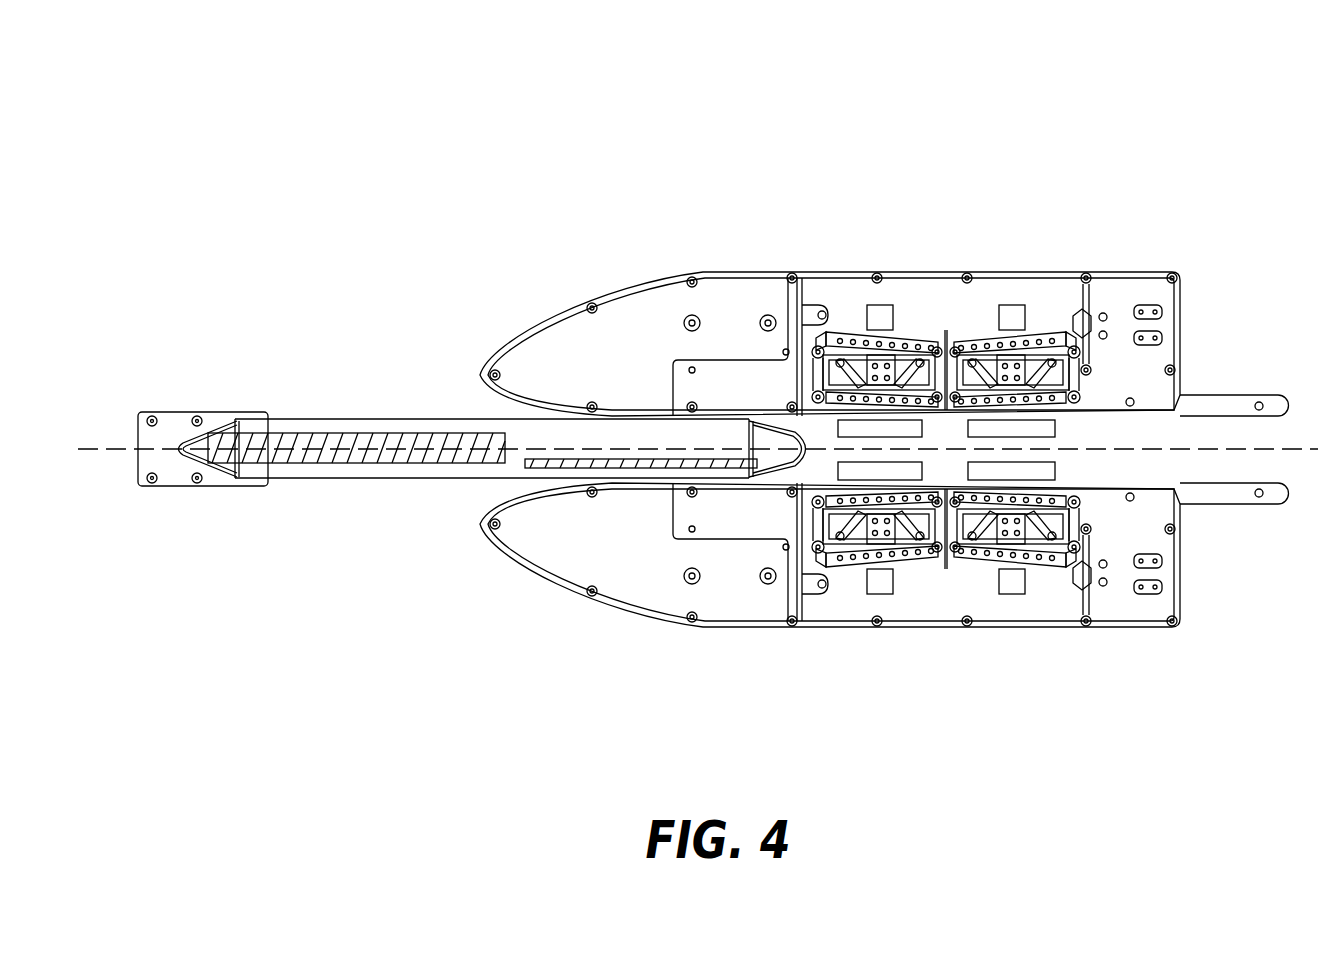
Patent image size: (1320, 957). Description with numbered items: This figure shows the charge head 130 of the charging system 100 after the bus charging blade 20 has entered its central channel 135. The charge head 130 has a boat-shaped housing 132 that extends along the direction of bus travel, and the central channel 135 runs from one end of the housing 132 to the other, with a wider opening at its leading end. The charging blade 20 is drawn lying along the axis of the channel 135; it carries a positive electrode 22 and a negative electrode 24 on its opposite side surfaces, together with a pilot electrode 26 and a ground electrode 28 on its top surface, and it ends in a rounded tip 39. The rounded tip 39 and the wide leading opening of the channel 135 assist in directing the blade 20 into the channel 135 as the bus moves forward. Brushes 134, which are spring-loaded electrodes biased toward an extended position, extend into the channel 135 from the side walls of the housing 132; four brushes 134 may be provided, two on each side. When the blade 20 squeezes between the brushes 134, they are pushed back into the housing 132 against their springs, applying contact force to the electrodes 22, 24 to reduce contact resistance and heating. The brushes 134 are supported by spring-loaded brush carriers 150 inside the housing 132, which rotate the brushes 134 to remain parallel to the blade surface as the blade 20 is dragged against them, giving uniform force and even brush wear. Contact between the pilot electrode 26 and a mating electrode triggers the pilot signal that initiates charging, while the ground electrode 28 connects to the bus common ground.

The projectile system 100 is at (108, 432).
The charging blade 20 is at (348, 390).
The positive electrode 22 is at (383, 480).
The negative electrode 24 is at (431, 420).
The pilot electrode 26 is at (313, 463).
The ground electrode 28 is at (542, 460).
The rounded tip 39 is at (812, 468).
The charge head 130 is at (688, 205).
The housing 132 is at (780, 272).
The brushes 134 is at (1052, 427).
The central channel 135 is at (1254, 432).
The brush carriers 150 is at (905, 362).